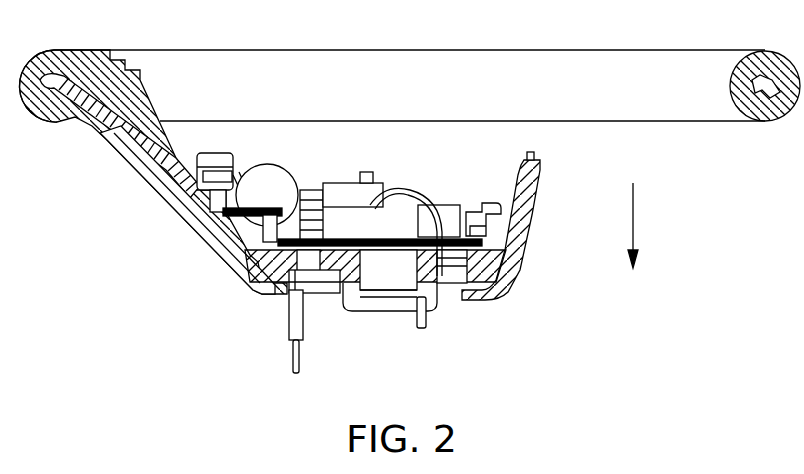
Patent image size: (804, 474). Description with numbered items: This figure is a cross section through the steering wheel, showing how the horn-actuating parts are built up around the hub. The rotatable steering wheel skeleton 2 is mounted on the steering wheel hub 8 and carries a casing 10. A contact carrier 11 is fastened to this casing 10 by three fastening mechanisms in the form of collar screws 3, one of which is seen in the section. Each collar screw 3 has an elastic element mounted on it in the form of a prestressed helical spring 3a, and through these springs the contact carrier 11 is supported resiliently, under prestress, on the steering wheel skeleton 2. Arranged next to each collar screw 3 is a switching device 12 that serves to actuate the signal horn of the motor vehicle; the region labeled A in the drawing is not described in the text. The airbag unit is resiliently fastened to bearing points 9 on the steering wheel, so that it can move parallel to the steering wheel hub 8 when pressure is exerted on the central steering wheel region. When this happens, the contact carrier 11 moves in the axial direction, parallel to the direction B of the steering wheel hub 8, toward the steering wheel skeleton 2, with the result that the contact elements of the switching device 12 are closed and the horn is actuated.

The steering wheel skeleton 2 is at (48, 122).
The casing 10 is at (88, 50).
The contact carrier 11 is at (200, 242).
The switching device 12 is at (243, 276).
The collar screw 3 is at (218, 152).
The prestressed helical spring 3a is at (165, 208).
The component A is at (272, 168).
The steering wheel hub 8 is at (387, 301).
The bearing point 9 is at (537, 163).
The direction B is at (636, 208).